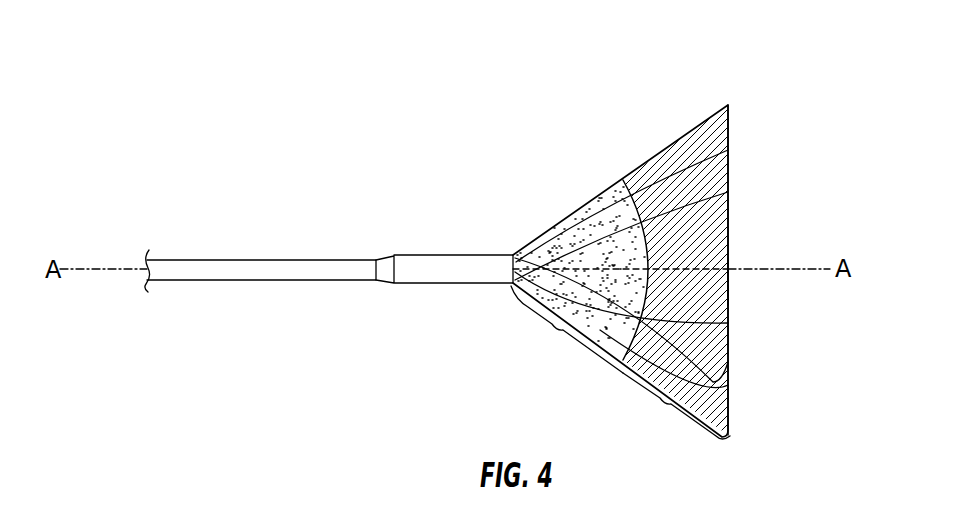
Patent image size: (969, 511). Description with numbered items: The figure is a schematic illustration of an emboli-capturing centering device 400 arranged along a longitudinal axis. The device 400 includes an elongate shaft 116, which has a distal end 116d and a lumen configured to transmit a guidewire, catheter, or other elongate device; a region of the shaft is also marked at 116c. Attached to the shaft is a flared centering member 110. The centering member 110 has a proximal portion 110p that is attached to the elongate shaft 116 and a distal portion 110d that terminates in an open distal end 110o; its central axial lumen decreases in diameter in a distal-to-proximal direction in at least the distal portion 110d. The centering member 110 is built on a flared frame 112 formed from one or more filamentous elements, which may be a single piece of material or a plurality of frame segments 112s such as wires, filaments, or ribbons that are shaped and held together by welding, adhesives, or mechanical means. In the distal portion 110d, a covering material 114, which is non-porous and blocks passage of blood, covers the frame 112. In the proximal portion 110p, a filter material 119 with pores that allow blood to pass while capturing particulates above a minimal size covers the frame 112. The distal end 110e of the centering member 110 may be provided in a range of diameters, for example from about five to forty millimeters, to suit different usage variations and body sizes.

The emboli-capturing centering device 400 is at (498, 103).
The flared centering member 110 is at (621, 362).
The proximal portion 110p is at (567, 329).
The distal portion 110d is at (676, 406).
The distal end 110e is at (736, 170).
The open distal end 110o is at (745, 295).
The flared frame 112 is at (647, 172).
The frame segments 112s is at (705, 220).
The covering material 114 is at (729, 135).
The elongate shaft 116 is at (296, 260).
The coupler 116c is at (393, 255).
The distal end 116d is at (729, 265).
The filter material 119 is at (607, 205).